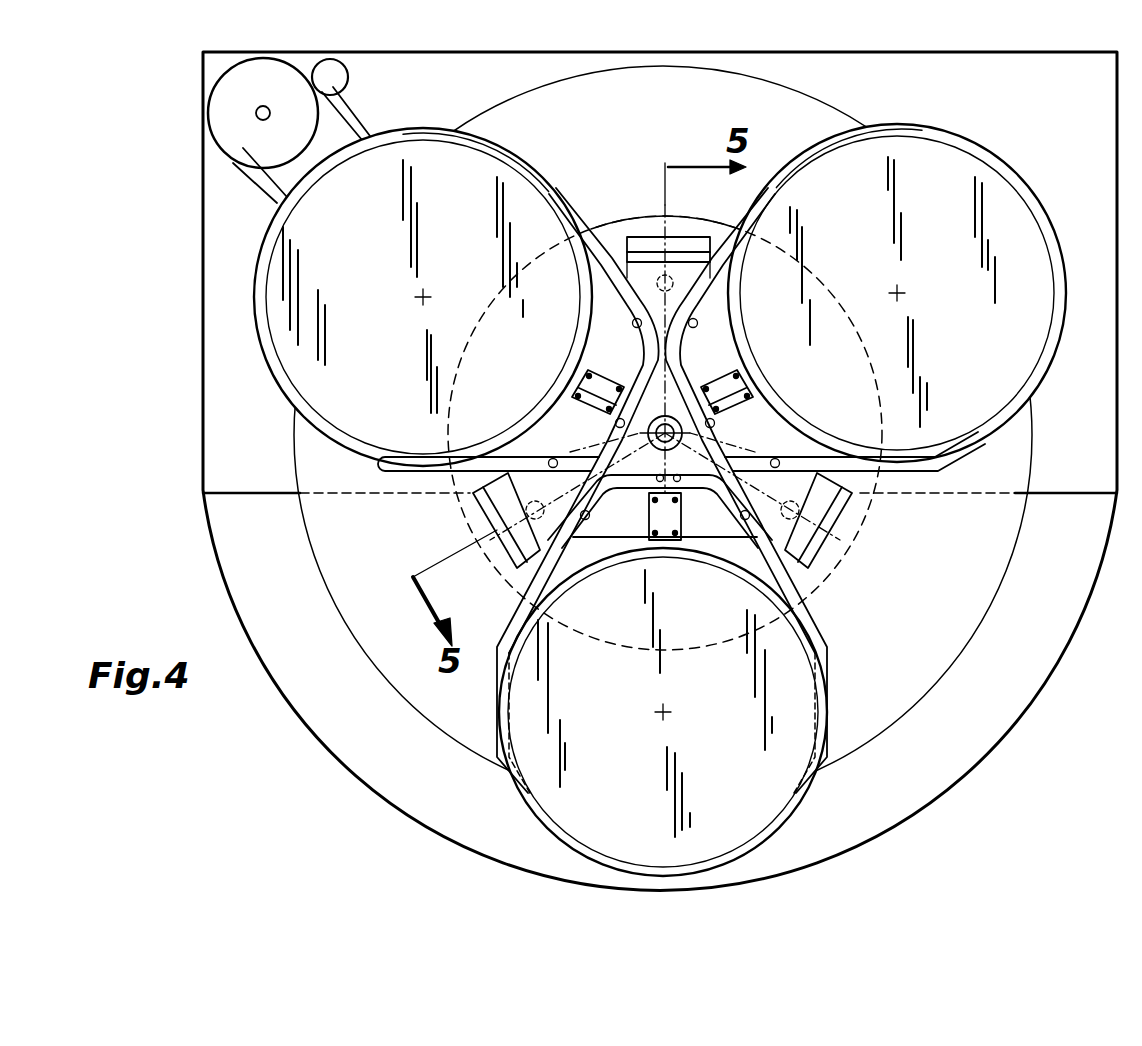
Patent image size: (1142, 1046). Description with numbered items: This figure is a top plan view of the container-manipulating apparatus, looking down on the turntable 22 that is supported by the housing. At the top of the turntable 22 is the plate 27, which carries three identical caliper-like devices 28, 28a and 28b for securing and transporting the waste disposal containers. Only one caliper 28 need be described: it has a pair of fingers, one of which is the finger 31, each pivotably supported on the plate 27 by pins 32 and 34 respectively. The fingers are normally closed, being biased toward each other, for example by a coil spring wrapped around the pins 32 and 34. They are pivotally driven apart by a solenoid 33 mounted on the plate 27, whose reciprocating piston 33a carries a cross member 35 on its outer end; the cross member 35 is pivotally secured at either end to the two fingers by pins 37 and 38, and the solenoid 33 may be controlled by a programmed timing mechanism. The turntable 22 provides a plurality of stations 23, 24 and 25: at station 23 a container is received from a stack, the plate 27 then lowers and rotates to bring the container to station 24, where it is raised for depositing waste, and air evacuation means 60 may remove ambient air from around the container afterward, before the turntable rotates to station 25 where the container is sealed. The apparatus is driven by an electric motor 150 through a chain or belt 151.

The turntable 22 is at (640, 165).
The station 23 is at (1025, 170).
The station 24 is at (838, 683).
The station 25 is at (372, 470).
The plate 27 is at (845, 517).
The caliper-like device 28 is at (862, 130).
The caliper-like device 28a is at (805, 607).
The caliper-like device 28b is at (566, 186).
The finger 31 is at (938, 466).
The pin 32 is at (700, 318).
The solenoid 33 is at (752, 386).
The reciprocating piston 33a is at (728, 330).
The pin 34 is at (790, 455).
The cross member 35 is at (673, 442).
The pin 37 is at (697, 395).
The pin 38 is at (722, 428).
The air evacuation means 60 is at (353, 72).
The electric motor 150 is at (243, 147).
The chain or belt 151 is at (344, 113).